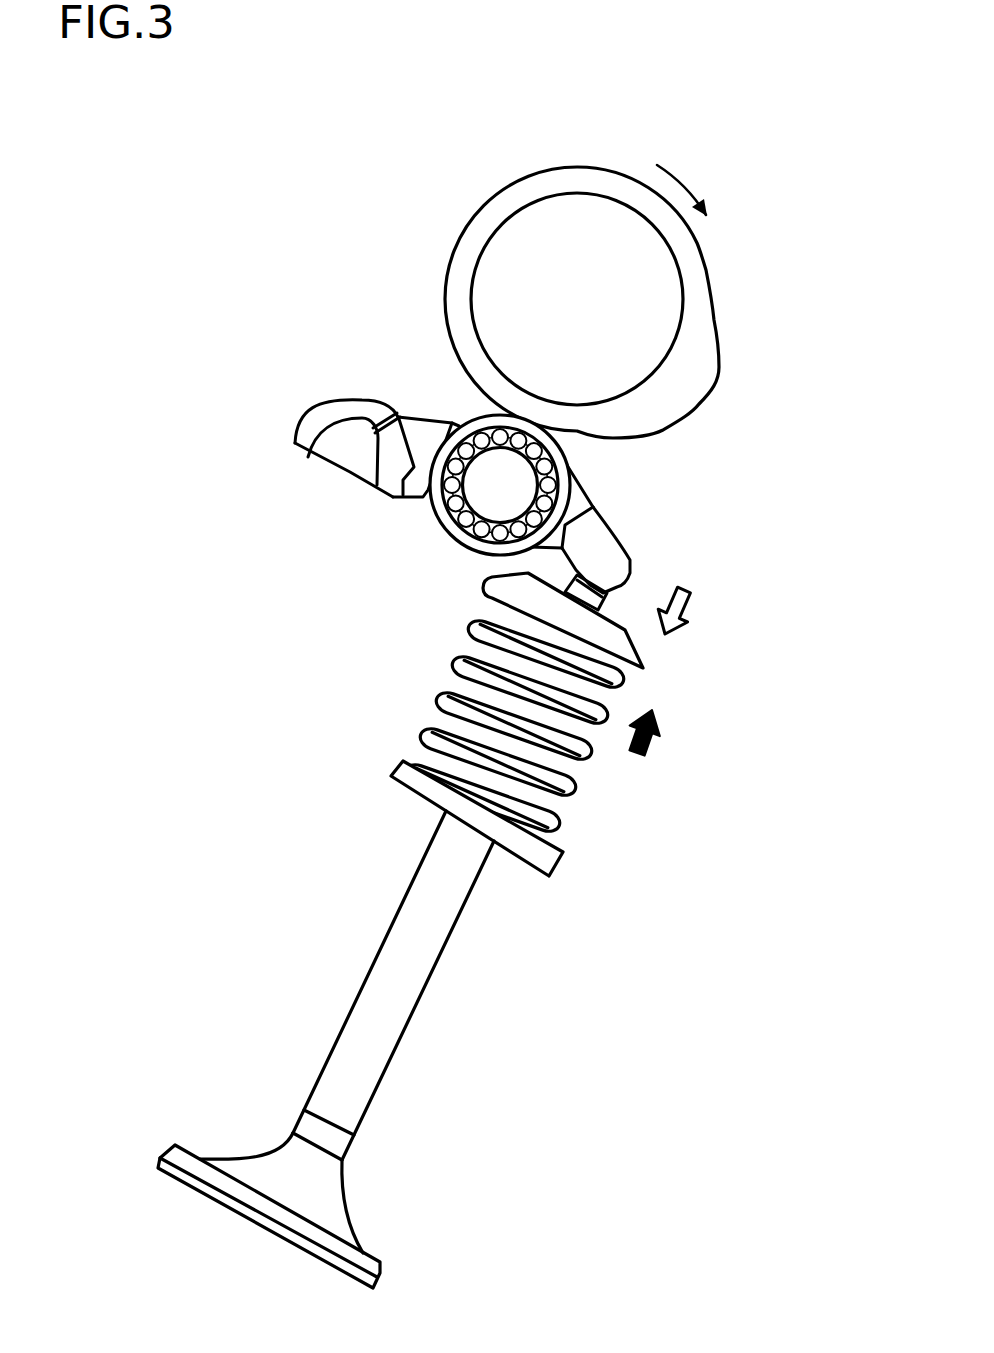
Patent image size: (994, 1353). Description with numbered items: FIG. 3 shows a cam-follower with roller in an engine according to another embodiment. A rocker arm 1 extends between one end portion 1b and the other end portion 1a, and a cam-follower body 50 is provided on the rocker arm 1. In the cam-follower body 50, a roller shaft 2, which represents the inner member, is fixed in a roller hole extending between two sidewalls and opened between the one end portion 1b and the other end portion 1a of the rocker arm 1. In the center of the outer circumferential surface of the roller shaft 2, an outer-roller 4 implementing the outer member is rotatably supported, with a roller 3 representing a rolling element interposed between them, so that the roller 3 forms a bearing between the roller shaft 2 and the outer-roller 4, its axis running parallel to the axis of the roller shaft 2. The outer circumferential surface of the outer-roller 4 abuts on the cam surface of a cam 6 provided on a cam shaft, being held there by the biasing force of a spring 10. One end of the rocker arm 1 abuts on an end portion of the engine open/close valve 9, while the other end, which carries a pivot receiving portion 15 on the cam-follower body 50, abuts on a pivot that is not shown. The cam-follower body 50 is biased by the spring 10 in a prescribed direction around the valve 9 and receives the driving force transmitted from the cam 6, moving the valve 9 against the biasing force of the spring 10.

The rocker arm 1 is at (592, 503).
The other end portion 1a is at (349, 373).
The one end portion 1b is at (637, 547).
The roller shaft 2 is at (491, 490).
The roller 3 is at (478, 428).
The outer-roller 4 is at (457, 533).
The cam 6 is at (698, 330).
The engine open/close valve 9 is at (402, 992).
The spring 10 is at (590, 748).
The pivot receiving portion 15 is at (358, 458).
The cam-follower body 50 is at (453, 560).